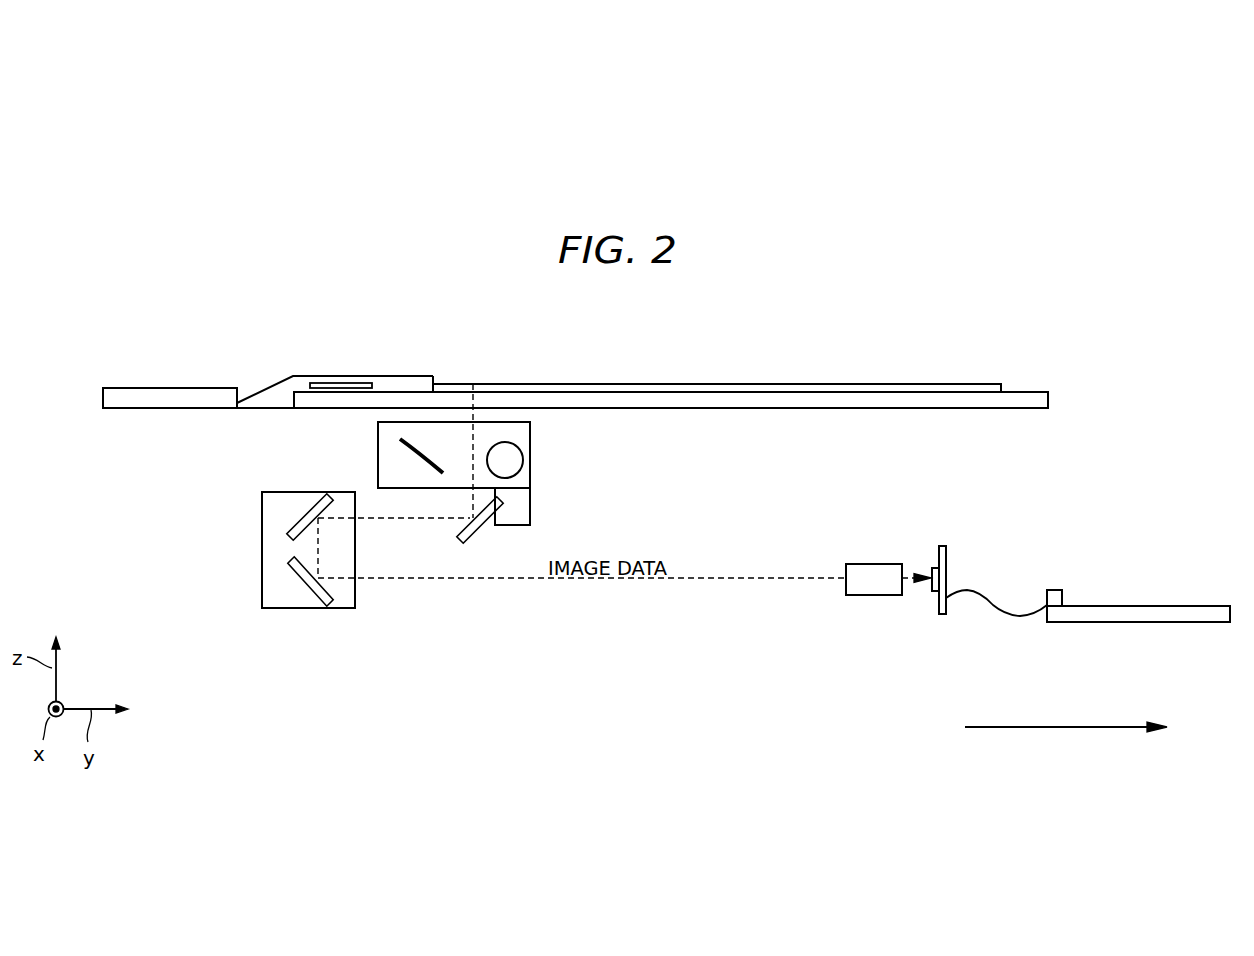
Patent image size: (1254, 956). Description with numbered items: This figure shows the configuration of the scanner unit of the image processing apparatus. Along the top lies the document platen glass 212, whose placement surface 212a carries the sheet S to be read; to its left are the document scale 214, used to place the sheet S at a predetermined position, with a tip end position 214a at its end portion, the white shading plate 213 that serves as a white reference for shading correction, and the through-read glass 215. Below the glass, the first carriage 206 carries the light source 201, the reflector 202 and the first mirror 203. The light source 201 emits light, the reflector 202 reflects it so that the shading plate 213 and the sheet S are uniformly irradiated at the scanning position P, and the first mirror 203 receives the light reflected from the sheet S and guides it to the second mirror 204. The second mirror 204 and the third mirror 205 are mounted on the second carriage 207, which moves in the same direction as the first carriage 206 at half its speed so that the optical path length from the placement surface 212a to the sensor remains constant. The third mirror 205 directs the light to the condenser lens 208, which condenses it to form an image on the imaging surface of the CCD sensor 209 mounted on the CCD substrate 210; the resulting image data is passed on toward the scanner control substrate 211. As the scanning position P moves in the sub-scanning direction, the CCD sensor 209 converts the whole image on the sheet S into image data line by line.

The light source 201 is at (523, 447).
The reflector 202 is at (402, 448).
The first mirror 203 is at (478, 526).
The second mirror 204 is at (302, 518).
The third mirror 205 is at (312, 592).
The first carriage 206 is at (530, 500).
The second carriage 207 is at (257, 613).
The condenser lens 208 is at (866, 564).
The CCD sensor 209 is at (935, 566).
The CCD substrate 210 is at (947, 560).
The scanner control substrate 211 is at (1158, 608).
The document platen glass 212 is at (702, 409).
The placement surface 212a is at (760, 388).
The shading plate 213 is at (340, 383).
The document scale 214 is at (262, 390).
The tip end position 214a is at (434, 376).
The through-read glass 215 is at (170, 402).
The sheet S is at (583, 383).
The scanning position P is at (477, 397).